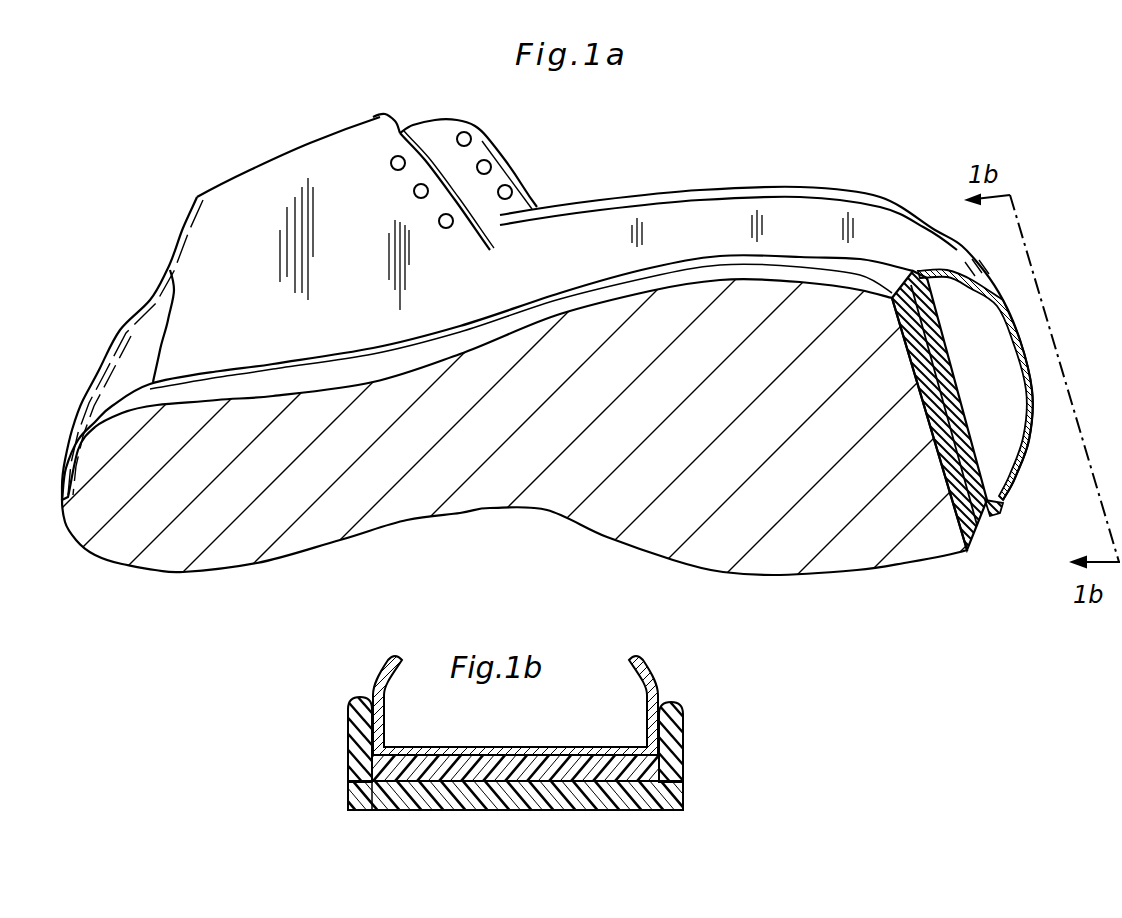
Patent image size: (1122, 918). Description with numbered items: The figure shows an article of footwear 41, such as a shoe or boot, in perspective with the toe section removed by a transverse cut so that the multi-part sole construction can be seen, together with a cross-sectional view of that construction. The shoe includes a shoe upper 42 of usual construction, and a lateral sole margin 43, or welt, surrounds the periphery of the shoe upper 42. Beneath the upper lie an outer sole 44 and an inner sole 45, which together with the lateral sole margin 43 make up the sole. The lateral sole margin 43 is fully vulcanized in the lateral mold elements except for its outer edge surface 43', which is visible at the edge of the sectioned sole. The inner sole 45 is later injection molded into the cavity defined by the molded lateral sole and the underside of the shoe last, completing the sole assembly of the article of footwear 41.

In FIG. 1A, the article of footwear 41 is at (848, 148).
In FIG. 1A, the shoe upper 42 is at (720, 222).
In FIG. 1B, the shoe upper 42 is at (380, 672).
In FIG. 1A, the lateral sole margin 43 is at (969, 362).
In FIG. 1B, the lateral sole margin 43 is at (515, 737).
In FIG. 1B, the outer edge surface 43' is at (311, 806).
In FIG. 1A, the outer sole 44 is at (860, 540).
In FIG. 1B, the outer sole 44 is at (683, 795).
In FIG. 1A, the inner sole 45 is at (953, 512).
In FIG. 1B, the inner sole 45 is at (380, 768).